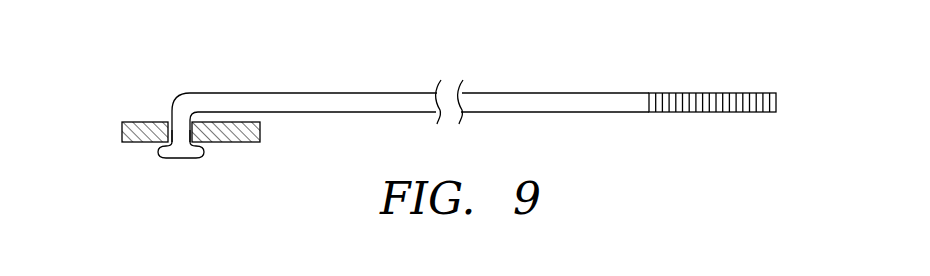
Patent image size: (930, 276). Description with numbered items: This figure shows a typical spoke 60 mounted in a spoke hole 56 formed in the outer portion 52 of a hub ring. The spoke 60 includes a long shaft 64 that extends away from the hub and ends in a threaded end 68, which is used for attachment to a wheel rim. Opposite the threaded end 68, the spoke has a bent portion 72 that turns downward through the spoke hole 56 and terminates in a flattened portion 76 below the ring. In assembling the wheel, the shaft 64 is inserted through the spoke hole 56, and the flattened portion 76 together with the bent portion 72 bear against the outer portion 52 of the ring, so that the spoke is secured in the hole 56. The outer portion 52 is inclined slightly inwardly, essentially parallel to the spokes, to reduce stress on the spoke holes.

The spoke 60 is at (162, 83).
The spoke hole 56 is at (170, 118).
The outer portion 52 is at (145, 135).
The long shaft 64 is at (340, 103).
The threaded end 68 is at (720, 104).
The bent portion 72 is at (182, 133).
The flattened portion 76 is at (180, 152).